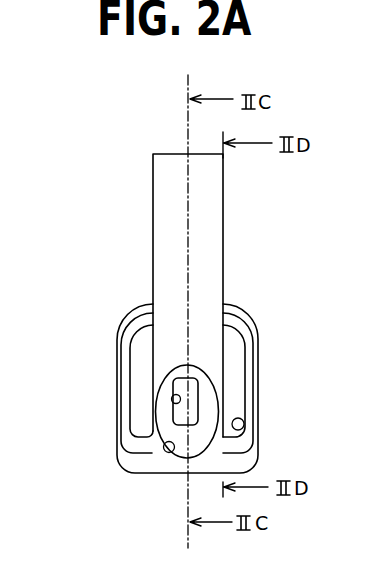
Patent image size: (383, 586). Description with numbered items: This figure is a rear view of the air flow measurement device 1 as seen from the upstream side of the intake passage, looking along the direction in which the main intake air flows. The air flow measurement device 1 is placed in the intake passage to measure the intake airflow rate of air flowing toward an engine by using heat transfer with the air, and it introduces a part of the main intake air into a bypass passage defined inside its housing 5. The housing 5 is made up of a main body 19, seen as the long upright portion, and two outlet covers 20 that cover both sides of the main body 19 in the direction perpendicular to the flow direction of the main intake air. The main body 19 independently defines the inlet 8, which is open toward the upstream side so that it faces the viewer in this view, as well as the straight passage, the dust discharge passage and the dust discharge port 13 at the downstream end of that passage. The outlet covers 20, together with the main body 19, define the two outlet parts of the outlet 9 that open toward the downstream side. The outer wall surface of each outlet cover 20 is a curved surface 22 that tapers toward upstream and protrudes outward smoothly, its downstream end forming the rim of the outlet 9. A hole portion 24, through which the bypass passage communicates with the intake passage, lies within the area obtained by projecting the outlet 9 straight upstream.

The air flow measurement device 1 is at (89, 106).
The housing 5 is at (144, 171).
The main body 19 is at (207, 227).
The outlet cover 20 is at (262, 308).
The curved surface 22 is at (251, 457).
The outlet 9 is at (233, 377).
The inlet 8 is at (173, 453).
The dust discharge port 13 is at (175, 411).
The hole portion 24 is at (243, 419).